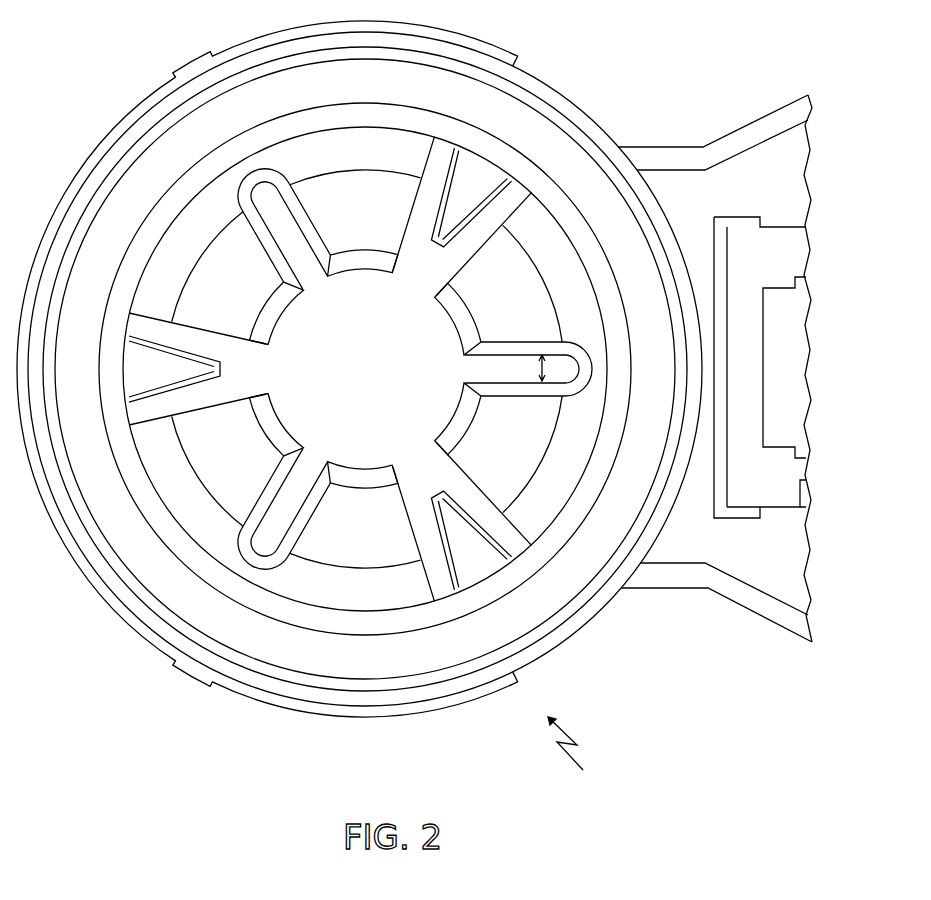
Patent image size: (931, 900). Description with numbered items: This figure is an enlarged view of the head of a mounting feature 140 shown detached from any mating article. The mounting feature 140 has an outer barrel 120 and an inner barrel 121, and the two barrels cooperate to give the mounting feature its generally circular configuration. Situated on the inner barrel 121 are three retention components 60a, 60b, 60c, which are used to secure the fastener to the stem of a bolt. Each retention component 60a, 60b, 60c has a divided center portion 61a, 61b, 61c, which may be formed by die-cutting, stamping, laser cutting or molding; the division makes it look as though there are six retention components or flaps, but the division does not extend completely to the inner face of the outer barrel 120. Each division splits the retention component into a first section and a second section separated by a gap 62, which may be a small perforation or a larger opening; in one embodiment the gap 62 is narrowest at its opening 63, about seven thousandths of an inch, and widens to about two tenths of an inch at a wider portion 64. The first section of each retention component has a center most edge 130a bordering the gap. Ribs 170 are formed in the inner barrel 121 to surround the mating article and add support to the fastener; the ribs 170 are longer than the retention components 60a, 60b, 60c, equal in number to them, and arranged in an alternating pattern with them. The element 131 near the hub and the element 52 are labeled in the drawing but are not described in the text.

The outer barrel 120 is at (547, 83).
The inner barrel 121 is at (417, 597).
The center most edge 130a is at (272, 333).
The hub opening 131 is at (417, 283).
The mounting feature 140 is at (585, 758).
The ribs 170 is at (176, 366).
The hub 52 is at (317, 450).
The retention component 60a is at (375, 138).
The retention component 60b is at (188, 512).
The retention component 60c is at (565, 265).
The divided center portion 61a is at (287, 220).
The divided center portion 61b is at (283, 510).
The divided center portion 61c is at (522, 357).
The gap 62 is at (315, 284).
The opening 63 is at (465, 367).
The wider portion 64 is at (537, 370).